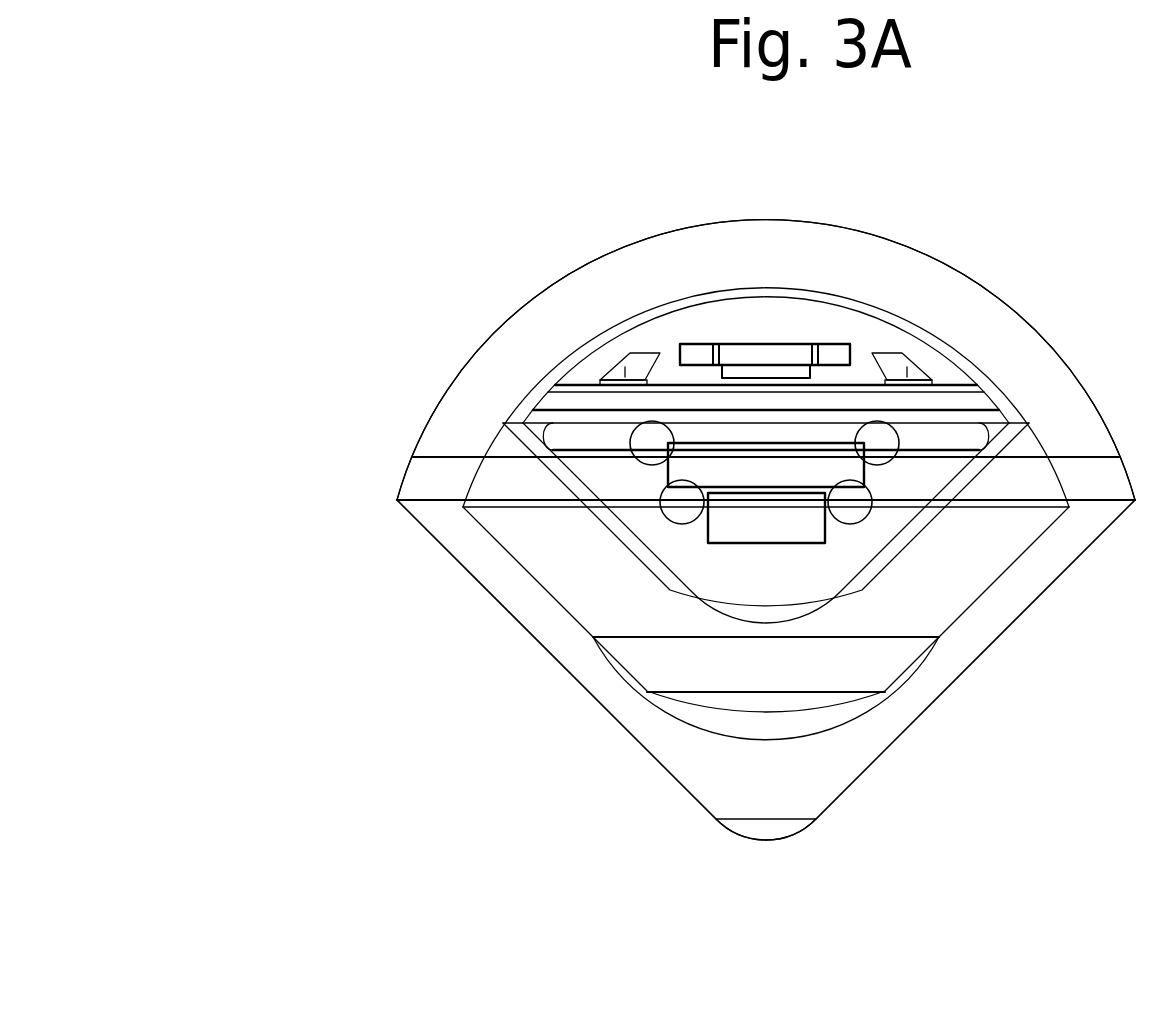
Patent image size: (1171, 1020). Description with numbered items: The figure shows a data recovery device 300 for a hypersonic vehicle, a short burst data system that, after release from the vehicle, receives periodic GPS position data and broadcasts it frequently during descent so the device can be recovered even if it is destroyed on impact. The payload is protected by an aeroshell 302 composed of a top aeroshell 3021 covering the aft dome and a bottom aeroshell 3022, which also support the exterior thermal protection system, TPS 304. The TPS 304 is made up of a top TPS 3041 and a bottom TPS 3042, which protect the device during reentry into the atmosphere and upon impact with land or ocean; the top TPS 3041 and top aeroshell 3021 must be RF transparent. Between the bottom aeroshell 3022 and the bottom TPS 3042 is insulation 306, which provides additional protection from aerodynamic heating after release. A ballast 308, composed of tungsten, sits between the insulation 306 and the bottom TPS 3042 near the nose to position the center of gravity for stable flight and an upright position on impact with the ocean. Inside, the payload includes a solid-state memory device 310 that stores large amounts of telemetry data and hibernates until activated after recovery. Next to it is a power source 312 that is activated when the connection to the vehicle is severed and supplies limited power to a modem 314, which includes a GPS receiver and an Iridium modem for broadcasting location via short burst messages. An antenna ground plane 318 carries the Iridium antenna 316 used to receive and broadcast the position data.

The data recovery device 300 is at (348, 205).
The aeroshell 302 is at (795, 456).
The top aeroshell 3021 is at (923, 313).
The bottom aeroshell 3022 is at (905, 558).
The TPS 304 is at (766, 500).
The top TPS 3041 is at (640, 246).
The bottom TPS 3042 is at (588, 699).
The insulation 306 is at (558, 570).
The ballast 308 is at (770, 740).
The solid-state memory device 310 is at (801, 545).
The power source 312 is at (640, 496).
The modem 314 is at (797, 340).
The Iridium antenna 316 is at (670, 399).
The antenna ground plane 318 is at (973, 373).